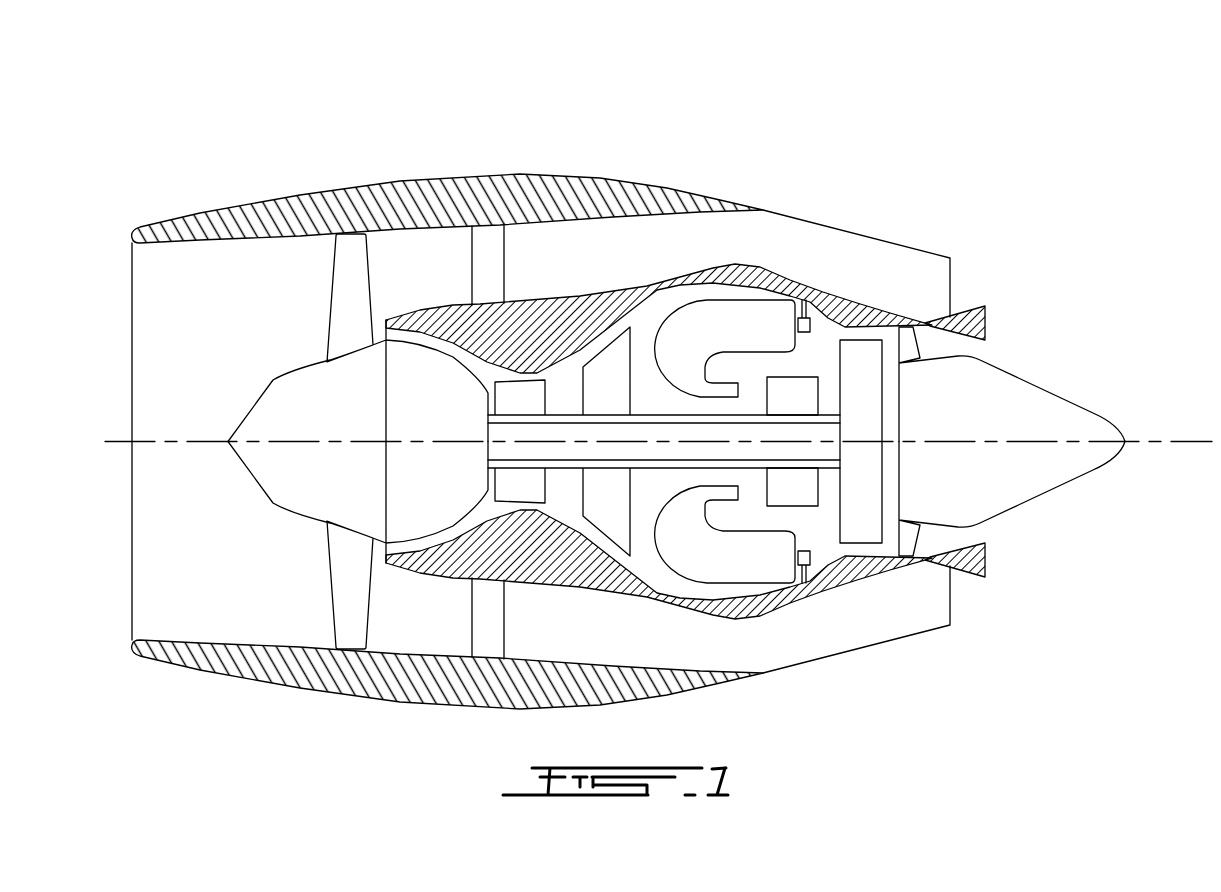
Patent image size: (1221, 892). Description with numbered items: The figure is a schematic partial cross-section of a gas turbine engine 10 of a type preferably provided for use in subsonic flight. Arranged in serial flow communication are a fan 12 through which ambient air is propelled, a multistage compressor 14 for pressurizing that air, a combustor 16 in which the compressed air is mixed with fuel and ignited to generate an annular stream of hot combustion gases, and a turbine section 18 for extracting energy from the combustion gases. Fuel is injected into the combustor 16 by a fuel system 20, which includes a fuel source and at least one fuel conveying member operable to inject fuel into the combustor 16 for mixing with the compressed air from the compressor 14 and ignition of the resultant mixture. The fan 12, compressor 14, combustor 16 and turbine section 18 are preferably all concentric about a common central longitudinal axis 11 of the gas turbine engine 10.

The gas turbine engine 10 is at (814, 162).
The central longitudinal axis 11 is at (1157, 443).
The fan 12 is at (347, 573).
The multistage compressor 14 is at (560, 390).
The combustor 16 is at (717, 300).
The turbine section 18 is at (828, 363).
The fuel system 20 is at (813, 308).